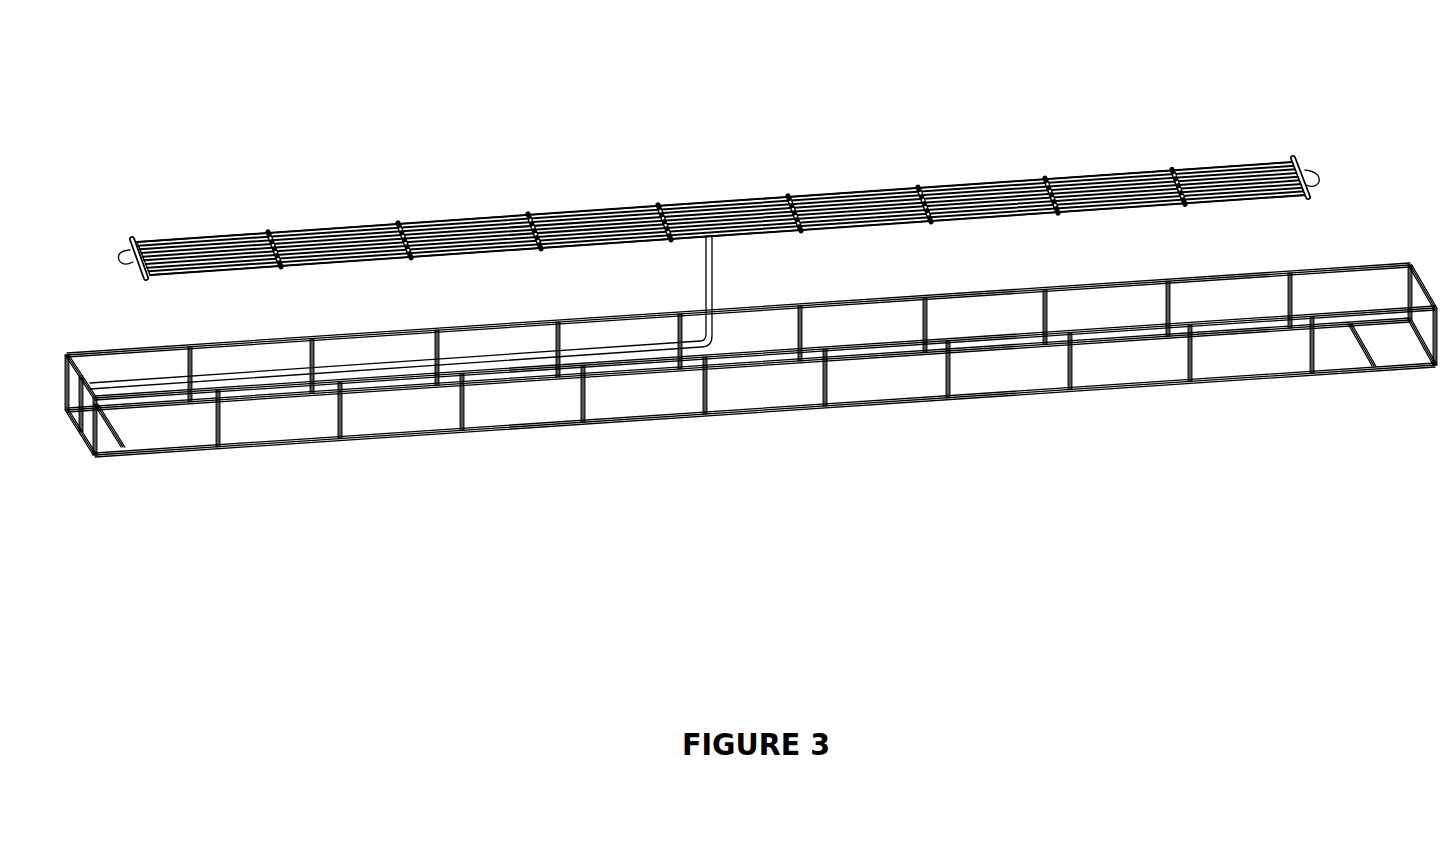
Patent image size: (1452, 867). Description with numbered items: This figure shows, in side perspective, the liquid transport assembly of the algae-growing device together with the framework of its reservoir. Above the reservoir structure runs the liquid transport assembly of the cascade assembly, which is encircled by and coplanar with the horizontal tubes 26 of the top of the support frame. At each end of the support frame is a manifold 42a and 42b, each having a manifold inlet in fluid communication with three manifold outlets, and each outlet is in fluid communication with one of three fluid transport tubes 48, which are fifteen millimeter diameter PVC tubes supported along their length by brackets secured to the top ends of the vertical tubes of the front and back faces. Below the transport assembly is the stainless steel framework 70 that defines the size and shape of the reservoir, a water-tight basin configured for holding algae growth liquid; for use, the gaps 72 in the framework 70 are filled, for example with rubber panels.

The horizontal tubes 26 is at (497, 225).
The manifold 42a is at (134, 251).
The manifold 42b is at (1300, 162).
The fluid transport tubes 48 is at (368, 227).
The framework 70 is at (568, 427).
The gaps 72 is at (790, 383).